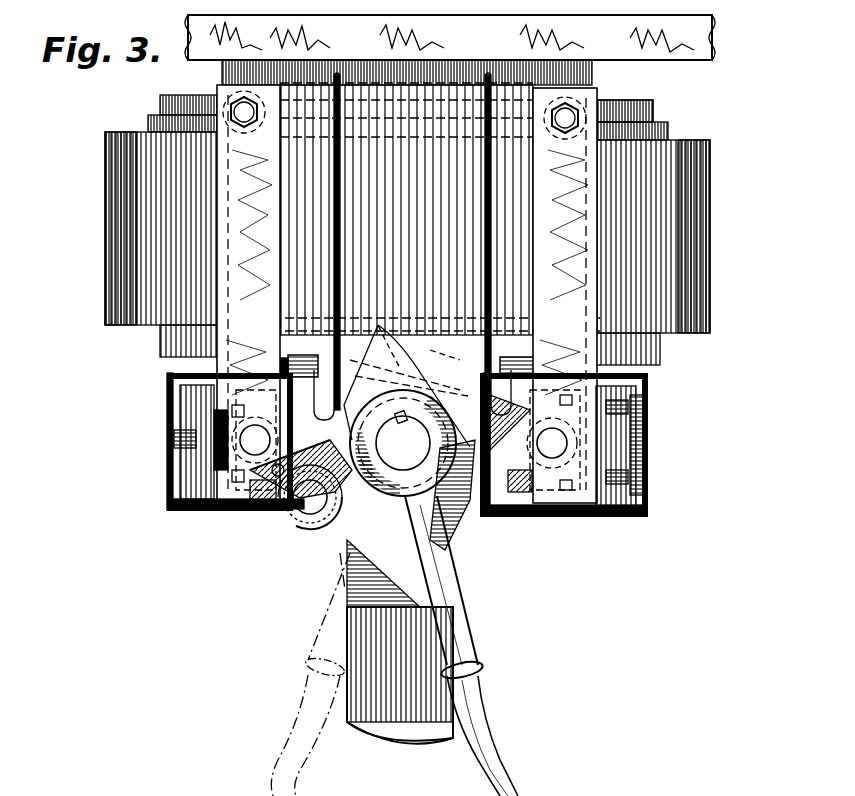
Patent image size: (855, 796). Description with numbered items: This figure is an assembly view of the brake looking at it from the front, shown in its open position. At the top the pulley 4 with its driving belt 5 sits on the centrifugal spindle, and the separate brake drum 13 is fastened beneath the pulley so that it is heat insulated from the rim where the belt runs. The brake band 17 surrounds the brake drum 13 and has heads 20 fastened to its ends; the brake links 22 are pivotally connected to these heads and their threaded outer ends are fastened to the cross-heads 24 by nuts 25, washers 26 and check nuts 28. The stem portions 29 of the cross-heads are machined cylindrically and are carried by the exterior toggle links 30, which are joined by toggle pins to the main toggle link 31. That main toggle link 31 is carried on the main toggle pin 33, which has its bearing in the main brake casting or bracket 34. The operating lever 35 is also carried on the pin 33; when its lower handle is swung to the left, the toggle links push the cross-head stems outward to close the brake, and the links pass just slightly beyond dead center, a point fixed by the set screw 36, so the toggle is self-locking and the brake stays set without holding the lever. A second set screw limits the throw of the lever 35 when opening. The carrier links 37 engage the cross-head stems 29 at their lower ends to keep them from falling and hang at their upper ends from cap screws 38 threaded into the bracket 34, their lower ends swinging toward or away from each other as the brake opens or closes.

The pulley 4 is at (653, 107).
The driving belt 5 is at (668, 125).
The brake drum 13 is at (200, 514).
The brake band 17 is at (192, 512).
The heads 20 is at (226, 512).
The brake links 22 is at (172, 456).
The cross-head 24 is at (576, 516).
The nut 25 is at (640, 386).
The washer 26 is at (594, 374).
The check nut 28 is at (542, 516).
The stem portion 29 is at (560, 516).
The exterior toggle link 30 is at (648, 428).
The main toggle link 31 is at (518, 516).
The main toggle pin 33 is at (470, 514).
The main brake casting or bracket 34 is at (340, 512).
The operating lever 35 is at (324, 636).
The set screw 36 is at (403, 352).
The carrier links 37 is at (700, 490).
The cap screws 38 is at (238, 105).